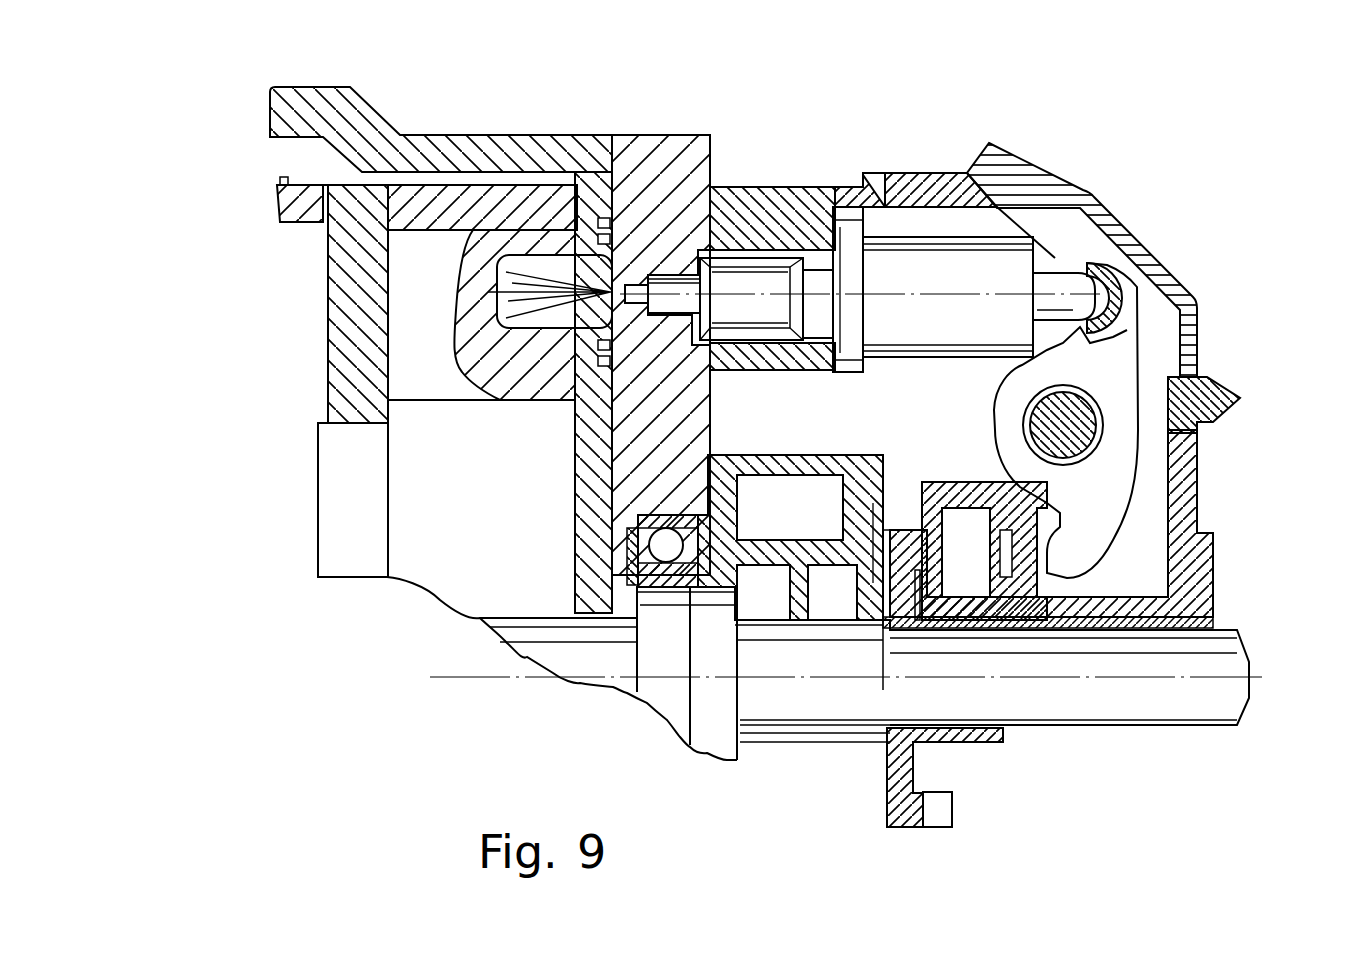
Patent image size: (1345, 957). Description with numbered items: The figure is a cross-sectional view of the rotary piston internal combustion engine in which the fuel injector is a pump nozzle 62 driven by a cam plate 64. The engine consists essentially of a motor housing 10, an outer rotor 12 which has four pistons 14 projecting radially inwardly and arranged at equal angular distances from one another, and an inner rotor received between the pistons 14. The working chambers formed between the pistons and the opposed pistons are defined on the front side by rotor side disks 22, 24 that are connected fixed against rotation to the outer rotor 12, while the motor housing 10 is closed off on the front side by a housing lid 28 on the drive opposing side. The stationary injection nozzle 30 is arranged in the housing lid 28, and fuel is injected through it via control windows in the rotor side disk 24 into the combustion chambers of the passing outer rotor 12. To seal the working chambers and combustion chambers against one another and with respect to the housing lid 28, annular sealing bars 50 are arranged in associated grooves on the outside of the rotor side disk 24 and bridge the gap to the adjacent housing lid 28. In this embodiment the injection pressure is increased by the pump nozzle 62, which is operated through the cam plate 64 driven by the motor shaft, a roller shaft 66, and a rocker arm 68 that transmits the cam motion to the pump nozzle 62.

The motor housing 10 is at (480, 160).
The outer rotor 12 is at (540, 210).
The pistons 14 is at (442, 263).
The rotor side disk 22 is at (355, 298).
The rotor side disk 24 is at (590, 180).
The housing lid 28 is at (675, 200).
The injection nozzle 30 is at (745, 187).
The sealing bars 50 is at (606, 356).
The pump nozzle 62 is at (938, 280).
The cam plate 64 is at (905, 762).
The roller shaft 66 is at (1057, 542).
The rocker arm 68 is at (1100, 467).